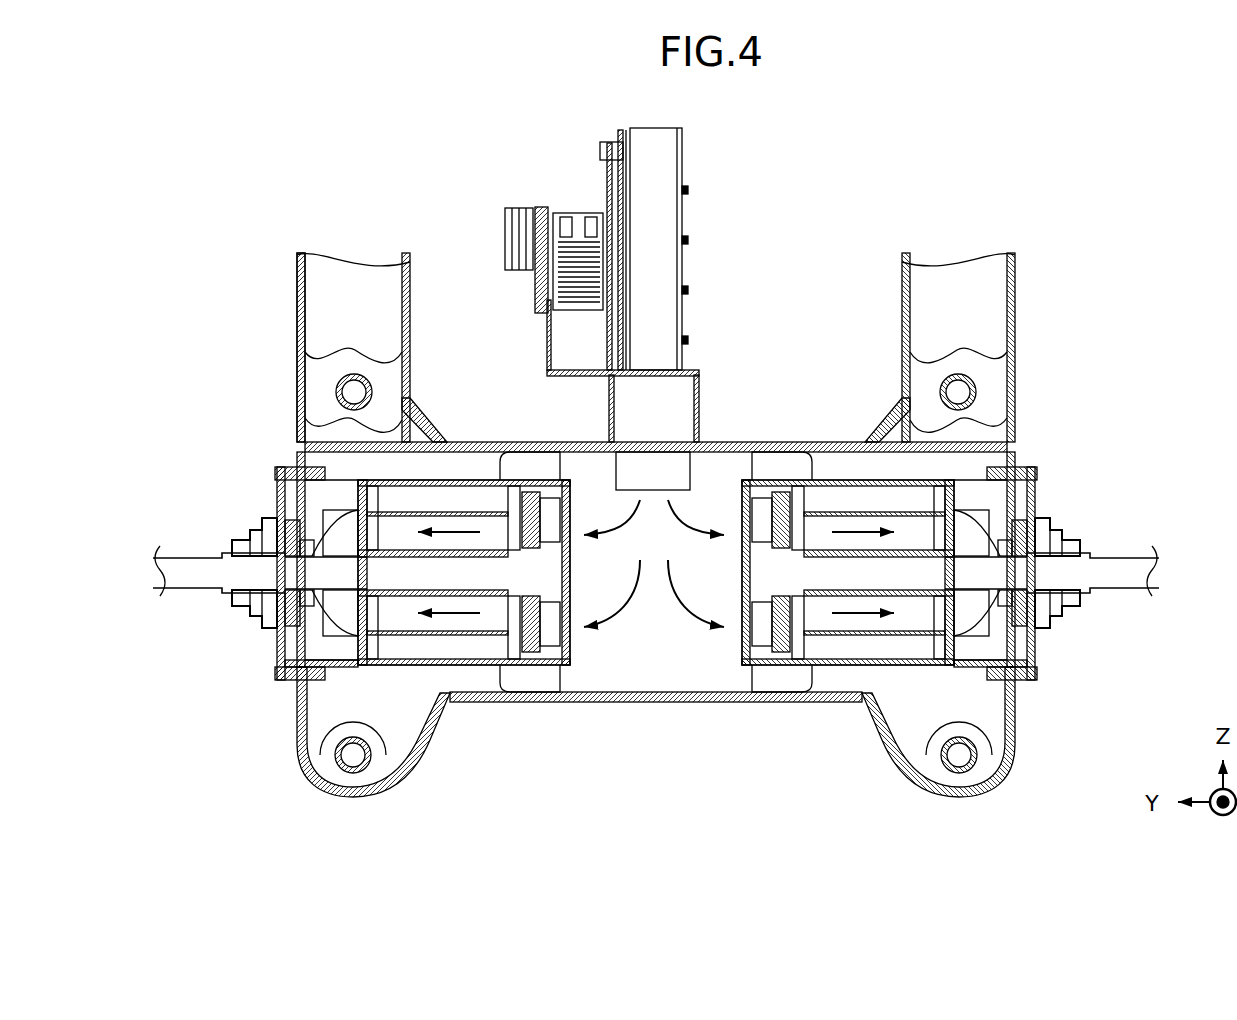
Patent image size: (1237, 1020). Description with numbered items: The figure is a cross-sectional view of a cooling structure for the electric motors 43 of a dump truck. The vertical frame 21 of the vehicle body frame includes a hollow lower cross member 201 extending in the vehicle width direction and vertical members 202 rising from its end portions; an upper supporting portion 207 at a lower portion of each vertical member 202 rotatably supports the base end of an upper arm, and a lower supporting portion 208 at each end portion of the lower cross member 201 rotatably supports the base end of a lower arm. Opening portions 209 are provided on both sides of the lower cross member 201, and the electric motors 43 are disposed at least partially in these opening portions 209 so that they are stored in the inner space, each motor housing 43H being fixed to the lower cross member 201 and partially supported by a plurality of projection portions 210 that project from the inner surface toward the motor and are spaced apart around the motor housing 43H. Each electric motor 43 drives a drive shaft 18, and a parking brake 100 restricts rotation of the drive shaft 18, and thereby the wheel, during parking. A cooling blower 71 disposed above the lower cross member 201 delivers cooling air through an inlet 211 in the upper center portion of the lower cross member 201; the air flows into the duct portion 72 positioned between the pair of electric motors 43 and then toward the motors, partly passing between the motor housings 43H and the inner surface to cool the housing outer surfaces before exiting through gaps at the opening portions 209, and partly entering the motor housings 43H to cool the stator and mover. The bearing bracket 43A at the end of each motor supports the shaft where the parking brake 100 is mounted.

The drive shaft 18 is at (168, 558).
The vertical frame 21 is at (297, 272).
The electric motor 43 is at (462, 670).
The bearing bracket 43A is at (342, 566).
The motor housing 43H is at (435, 482).
The cooling blower 71 is at (684, 282).
The duct portion 72 is at (653, 690).
The parking brake 100 is at (232, 527).
The lower cross member 201 is at (700, 440).
The vertical member 202 is at (400, 282).
The upper supporting portion 207 is at (350, 392).
The lower supporting portion 208 is at (348, 757).
The opening portion 209 is at (287, 665).
The projection portion 210 is at (528, 466).
The inlet 211 is at (672, 462).